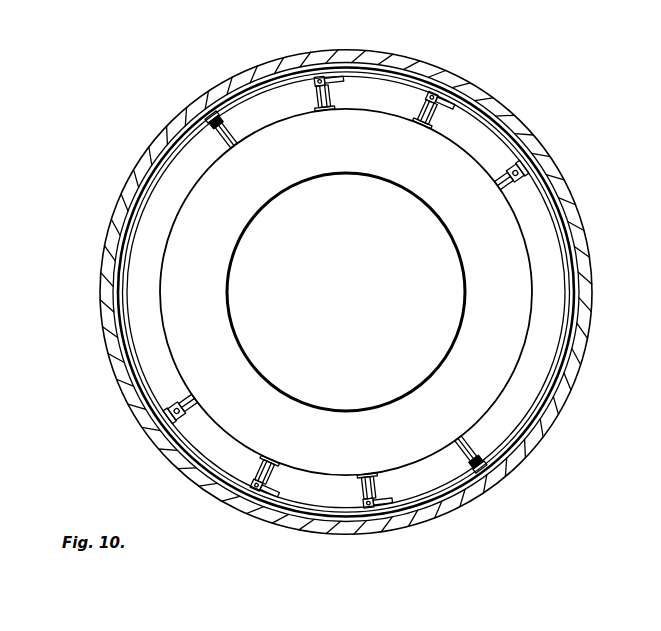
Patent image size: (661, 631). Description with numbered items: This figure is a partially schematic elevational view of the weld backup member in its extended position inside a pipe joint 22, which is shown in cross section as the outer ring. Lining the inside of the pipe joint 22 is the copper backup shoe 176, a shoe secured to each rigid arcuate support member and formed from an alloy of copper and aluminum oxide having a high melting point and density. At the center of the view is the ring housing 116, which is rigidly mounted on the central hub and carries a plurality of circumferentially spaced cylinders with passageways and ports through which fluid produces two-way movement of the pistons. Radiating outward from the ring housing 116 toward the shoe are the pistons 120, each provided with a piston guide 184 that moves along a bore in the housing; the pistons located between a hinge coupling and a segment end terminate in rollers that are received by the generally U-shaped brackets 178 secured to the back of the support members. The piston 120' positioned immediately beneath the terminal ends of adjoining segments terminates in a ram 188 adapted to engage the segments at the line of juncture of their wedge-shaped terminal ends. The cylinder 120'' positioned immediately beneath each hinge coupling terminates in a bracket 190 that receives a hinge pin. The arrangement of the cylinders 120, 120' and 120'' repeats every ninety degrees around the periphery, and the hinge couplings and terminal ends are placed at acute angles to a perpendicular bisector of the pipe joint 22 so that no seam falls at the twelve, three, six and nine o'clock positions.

The pipe joint 22 is at (574, 206).
The copper backup shoe 176 is at (582, 307).
The ring housing 116 is at (386, 160).
The piston 120 is at (345, 292).
The piston 120' is at (346, 284).
The cylinder 120'' is at (346, 292).
The U-shaped bracket 178 is at (349, 88).
The piston guide 184 is at (336, 112).
The ram 188 is at (215, 116).
The bracket 190 is at (518, 178).